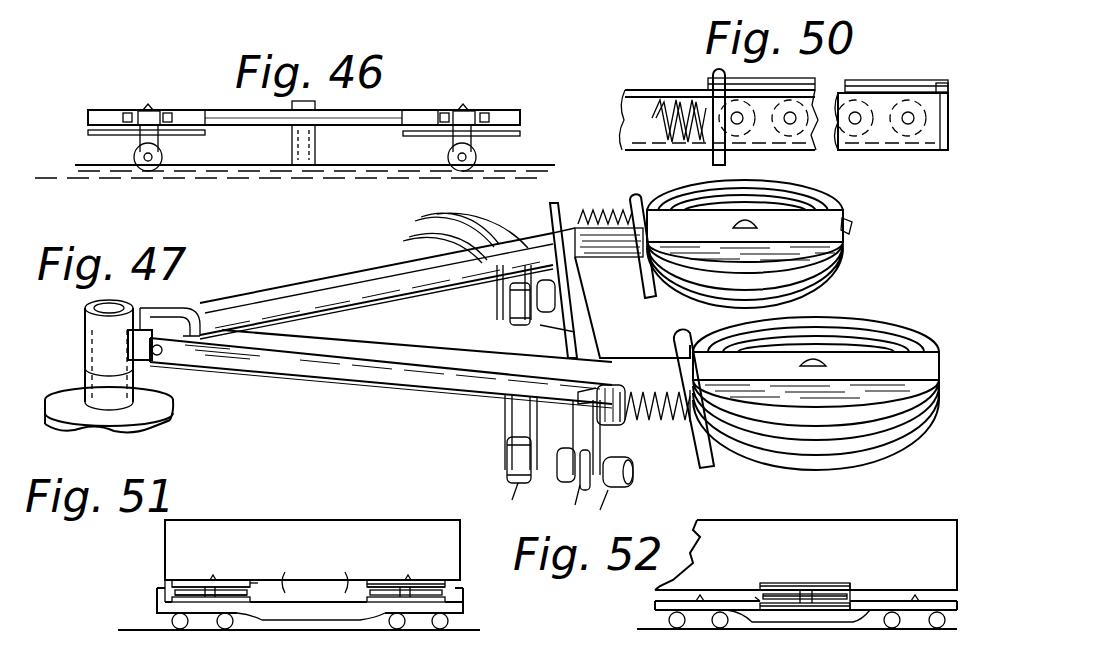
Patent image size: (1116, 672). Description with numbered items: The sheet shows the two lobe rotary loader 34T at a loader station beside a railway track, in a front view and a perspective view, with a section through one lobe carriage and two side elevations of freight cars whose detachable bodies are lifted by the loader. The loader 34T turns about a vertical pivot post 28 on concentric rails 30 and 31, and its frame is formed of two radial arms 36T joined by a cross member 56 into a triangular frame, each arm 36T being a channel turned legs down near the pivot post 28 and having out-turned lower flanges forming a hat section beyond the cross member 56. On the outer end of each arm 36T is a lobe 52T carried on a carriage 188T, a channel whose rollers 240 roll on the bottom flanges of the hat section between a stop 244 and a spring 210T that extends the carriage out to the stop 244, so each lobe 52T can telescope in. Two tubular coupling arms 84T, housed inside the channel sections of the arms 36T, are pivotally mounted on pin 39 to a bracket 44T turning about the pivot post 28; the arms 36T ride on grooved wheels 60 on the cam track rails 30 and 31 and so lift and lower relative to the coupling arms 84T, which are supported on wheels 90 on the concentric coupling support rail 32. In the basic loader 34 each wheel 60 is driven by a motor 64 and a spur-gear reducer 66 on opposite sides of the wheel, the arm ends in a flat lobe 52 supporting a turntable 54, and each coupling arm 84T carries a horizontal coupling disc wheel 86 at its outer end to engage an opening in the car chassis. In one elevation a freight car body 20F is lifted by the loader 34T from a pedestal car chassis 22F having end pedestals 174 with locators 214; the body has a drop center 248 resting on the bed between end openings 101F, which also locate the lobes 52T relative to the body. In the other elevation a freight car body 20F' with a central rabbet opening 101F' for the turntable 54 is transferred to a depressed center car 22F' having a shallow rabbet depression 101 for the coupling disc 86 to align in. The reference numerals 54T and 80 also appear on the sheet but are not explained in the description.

In FIG. 46, the vertical pivot post 28 is at (303, 101).
In FIG. 47, the vertical pivot post 28 is at (102, 308).
In FIG. 47, the rail 30 is at (437, 214).
In FIG. 47, the rail 31 is at (404, 241).
In FIG. 47, the coupling support rail 32 is at (498, 298).
In FIG. 52, the loader 34 is at (828, 582).
In FIG. 46, the two lobe rotary loader 34T is at (218, 110).
In FIG. 47, the two lobe rotary loader 34T is at (308, 290).
In FIG. 51, the two lobe rotary loader 34T is at (381, 580).
In FIG. 50, the radial arm 36T is at (625, 93).
In FIG. 47, the radial arm 36T is at (414, 292).
In FIG. 47, the pin 39 is at (163, 354).
In FIG. 46, the bracket 44T is at (312, 133).
In FIG. 47, the bracket 44T is at (138, 368).
In FIG. 52, the flat lobe 52 is at (778, 583).
In FIG. 46, the lobe 52T is at (128, 92).
In FIG. 47, the lobe 52T is at (843, 322).
In FIG. 52, the turntable 54 is at (810, 583).
In FIG. 51, the pad plate 54T is at (181, 580).
In FIG. 46, the cross member 56 is at (356, 110).
In FIG. 47, the cross member 56 is at (578, 299).
In FIG. 46, the wheel 60 is at (165, 156).
In FIG. 47, the wheel 60 is at (603, 488).
In FIG. 47, the motor 64 is at (625, 469).
In FIG. 47, the spur-gear reducer 66 is at (566, 492).
In FIG. 50, the pin 80 is at (716, 73).
In FIG. 47, the pin 80 is at (650, 298).
In FIG. 47, the tubular coupling arm 84T is at (345, 305).
In FIG. 46, the coupling disc wheel 86 is at (112, 137).
In FIG. 47, the coupling disc wheel 86 is at (717, 307).
In FIG. 51, the coupling disc wheel 86 is at (367, 592).
In FIG. 52, the coupling disc wheel 86 is at (760, 597).
In FIG. 47, the wheel 90 is at (510, 318).
In FIG. 52, the shallow rabbet depression 101 is at (856, 590).
In FIG. 51, the end opening 101F is at (265, 580).
In FIG. 52, the central rabbet opening 101F' is at (849, 562).
In FIG. 51, the end pedestal 174 is at (157, 590).
In FIG. 50, the carriage 188T is at (815, 87).
In FIG. 47, the carriage 188T is at (925, 358).
In FIG. 51, the freight car body 20F is at (312, 531).
In FIG. 52, the freight car body 20F' is at (806, 536).
In FIG. 50, the spring 210T is at (660, 100).
In FIG. 47, the spring 210T is at (616, 196).
In FIG. 51, the locator 214 is at (168, 582).
In FIG. 51, the pedestal car chassis 22F is at (277, 603).
In FIG. 52, the depressed center car 22F' is at (763, 610).
In FIG. 50, the roller 240 is at (782, 152).
In FIG. 50, the stop 244 is at (944, 84).
In FIG. 47, the stop 244 is at (935, 362).
In FIG. 51, the drop center 248 is at (257, 588).